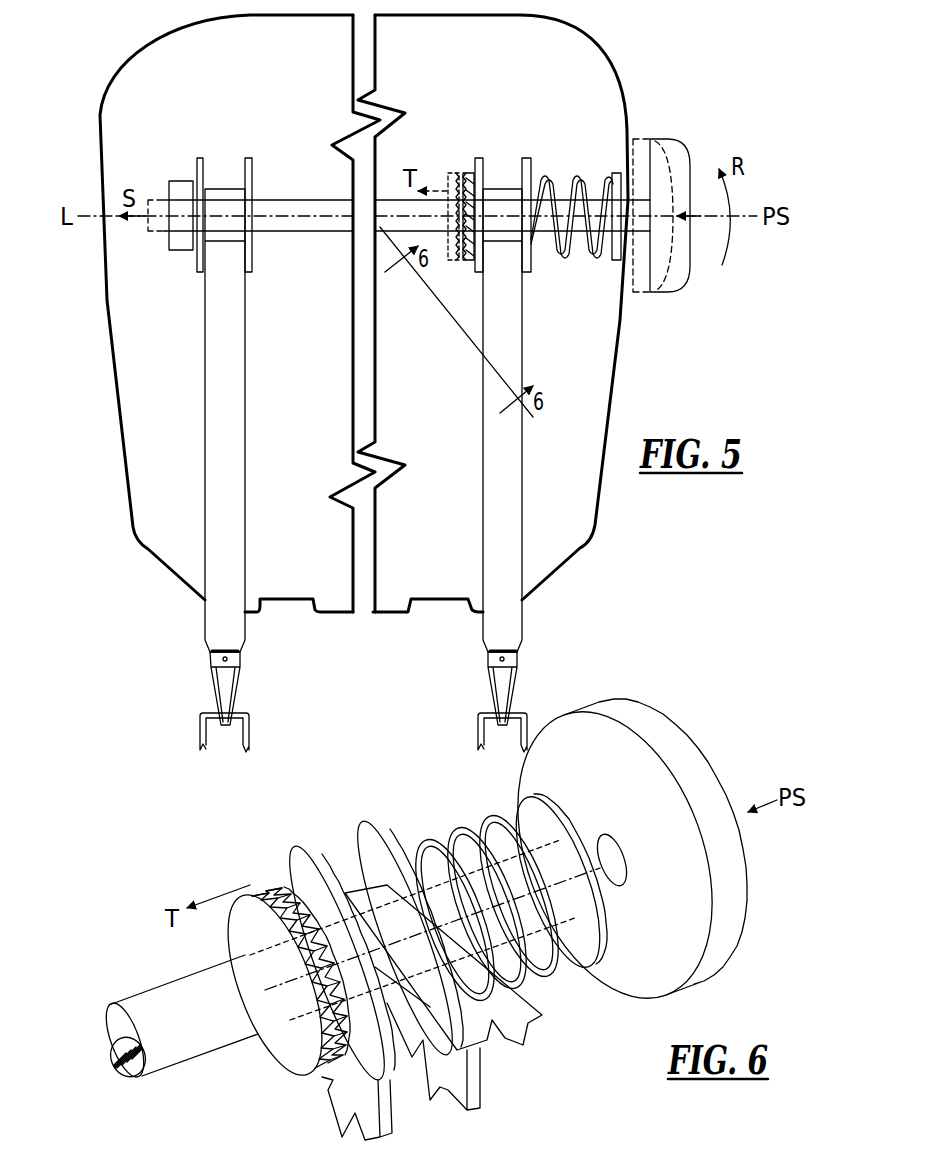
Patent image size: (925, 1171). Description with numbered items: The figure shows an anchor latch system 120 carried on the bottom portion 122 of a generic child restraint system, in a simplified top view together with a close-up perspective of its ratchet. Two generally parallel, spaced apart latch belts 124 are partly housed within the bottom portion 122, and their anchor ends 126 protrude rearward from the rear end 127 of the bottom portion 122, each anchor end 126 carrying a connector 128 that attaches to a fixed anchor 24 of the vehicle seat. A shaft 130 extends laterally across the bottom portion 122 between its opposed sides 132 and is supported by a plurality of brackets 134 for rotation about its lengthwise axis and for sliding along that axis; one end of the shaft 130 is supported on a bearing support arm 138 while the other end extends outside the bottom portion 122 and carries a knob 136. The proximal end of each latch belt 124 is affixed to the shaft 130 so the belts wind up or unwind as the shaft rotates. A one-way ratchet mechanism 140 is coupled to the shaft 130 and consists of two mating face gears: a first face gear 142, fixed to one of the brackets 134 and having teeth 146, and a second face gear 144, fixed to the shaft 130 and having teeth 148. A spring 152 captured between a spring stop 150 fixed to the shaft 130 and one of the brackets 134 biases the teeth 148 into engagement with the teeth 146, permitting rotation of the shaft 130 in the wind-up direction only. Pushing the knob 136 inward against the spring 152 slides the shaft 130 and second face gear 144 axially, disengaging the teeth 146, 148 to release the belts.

In FIG. 5, the fixed anchors 24 is at (200, 733).
In FIG. 5, the anchor latch system 120 is at (450, 135).
In FIG. 5, the bottom portion 122 is at (128, 560).
In FIG. 5, the latch belts 124 is at (223, 471).
In FIG. 6, the latch belts 124 is at (432, 1012).
In FIG. 5, the anchor ends 126 is at (200, 649).
In FIG. 5, the rear end 127 is at (333, 614).
In FIG. 5, the connector 128 is at (224, 688).
In FIG. 5, the shaft 130 is at (291, 208).
In FIG. 6, the shaft 130 is at (157, 1010).
In FIG. 5, the sides 132 is at (111, 370).
In FIG. 5, the brackets 134 is at (203, 168).
In FIG. 6, the brackets 134 is at (268, 873).
In FIG. 5, the knob 136 is at (681, 152).
In FIG. 6, the knob 136 is at (698, 773).
In FIG. 5, the bearing support arm 138 is at (183, 182).
In FIG. 5, the one-way ratchet mechanism 140 is at (471, 150).
In FIG. 6, the one-way ratchet mechanism 140 is at (287, 1087).
In FIG. 6, the first face gear 142 is at (267, 877).
In FIG. 5, the second face gear 144 is at (466, 261).
In FIG. 6, the second face gear 144 is at (243, 920).
In FIG. 6, the teeth 146 is at (322, 886).
In FIG. 6, the teeth 148 is at (308, 980).
In FIG. 5, the spring stop 150 is at (615, 173).
In FIG. 6, the spring stop 150 is at (540, 808).
In FIG. 5, the spring 152 is at (560, 180).
In FIG. 6, the spring 152 is at (487, 908).